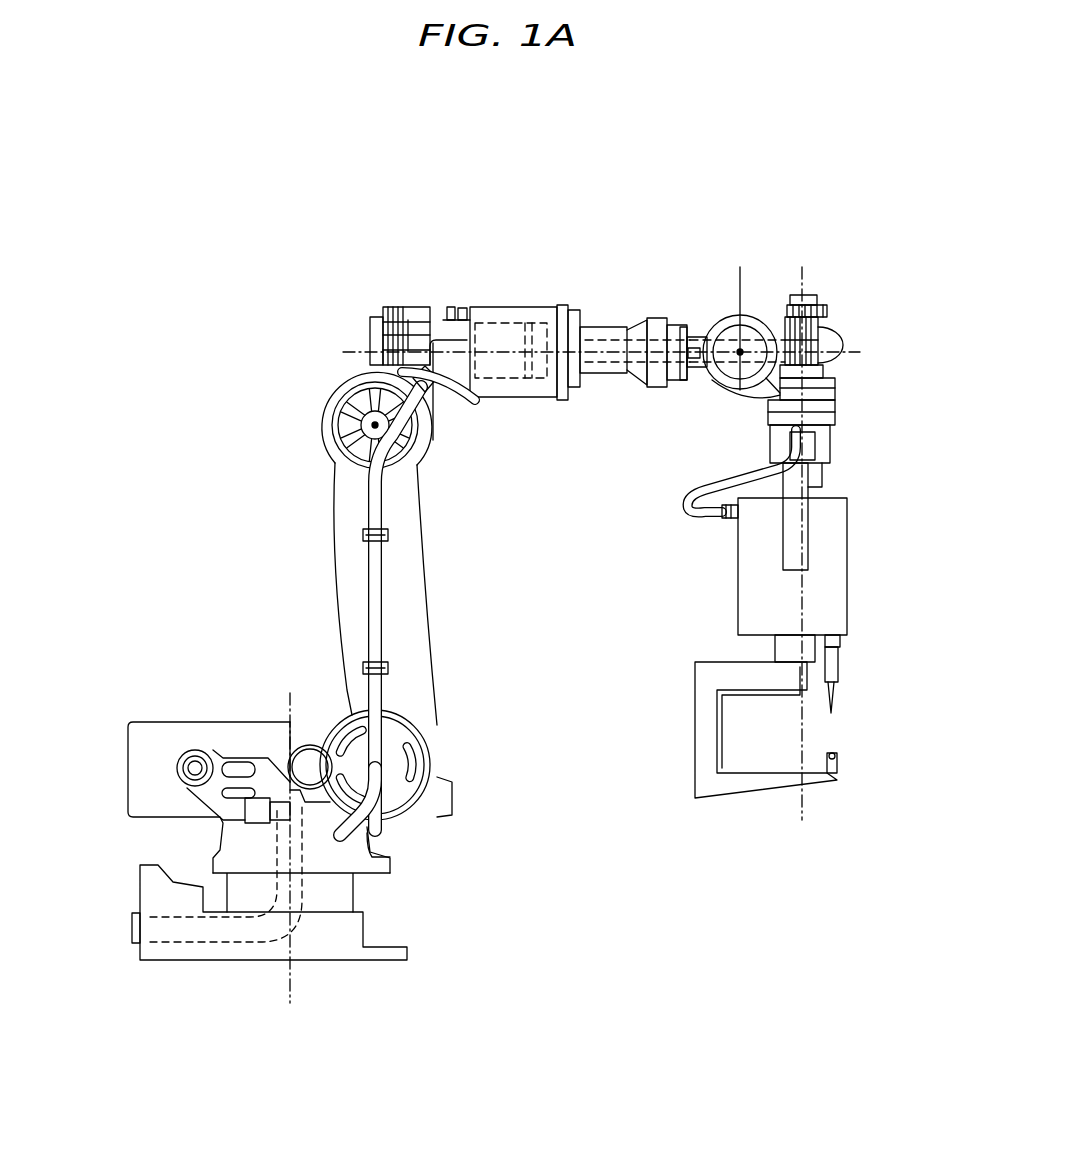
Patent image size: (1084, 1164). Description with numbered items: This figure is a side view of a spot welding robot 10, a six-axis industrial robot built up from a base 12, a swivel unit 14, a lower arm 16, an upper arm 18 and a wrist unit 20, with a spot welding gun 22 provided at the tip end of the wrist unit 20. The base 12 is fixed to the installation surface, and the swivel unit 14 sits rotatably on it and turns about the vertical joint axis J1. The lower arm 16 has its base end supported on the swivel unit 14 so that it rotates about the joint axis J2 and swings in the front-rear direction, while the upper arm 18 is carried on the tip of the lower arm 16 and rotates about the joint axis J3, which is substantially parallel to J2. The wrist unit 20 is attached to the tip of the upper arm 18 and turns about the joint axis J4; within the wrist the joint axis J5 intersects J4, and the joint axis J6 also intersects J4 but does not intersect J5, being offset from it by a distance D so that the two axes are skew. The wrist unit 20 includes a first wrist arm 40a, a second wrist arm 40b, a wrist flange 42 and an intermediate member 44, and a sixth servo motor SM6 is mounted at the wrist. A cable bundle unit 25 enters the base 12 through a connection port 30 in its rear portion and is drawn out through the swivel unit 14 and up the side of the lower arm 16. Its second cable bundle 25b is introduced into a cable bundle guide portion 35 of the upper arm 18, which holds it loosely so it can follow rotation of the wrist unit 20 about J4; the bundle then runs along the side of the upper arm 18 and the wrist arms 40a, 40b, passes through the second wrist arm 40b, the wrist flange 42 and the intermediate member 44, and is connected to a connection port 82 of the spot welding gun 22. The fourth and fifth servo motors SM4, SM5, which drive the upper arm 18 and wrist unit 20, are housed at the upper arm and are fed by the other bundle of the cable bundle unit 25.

The spot welding robot 10 is at (275, 152).
The base 12 is at (363, 917).
The swivel unit 14 is at (380, 832).
The lower arm 16 is at (420, 602).
The upper arm 18 is at (607, 382).
The wrist unit 20 is at (822, 262).
The spot welding gun 22 is at (707, 722).
The cable bundle unit 25 is at (367, 417).
The second cable bundle 25b is at (608, 415).
The connection port 30 is at (125, 917).
The cable bundle guide portion 35 is at (510, 306).
The first wrist arm 40a is at (703, 417).
The second wrist arm 40b is at (837, 388).
The wrist flange 42 is at (837, 423).
The intermediate member 44 is at (828, 447).
The connection port 82 is at (723, 520).
The joint axis J1 is at (293, 667).
The joint axis J2 is at (427, 725).
The joint axis J3 is at (413, 450).
The joint axis J4 is at (315, 354).
The joint axis J5 is at (733, 363).
The joint axis J6 is at (803, 287).
The fourth servo motor SM4 is at (382, 317).
The fifth servo motor SM5 is at (377, 360).
The sixth servo motor SM6 is at (827, 328).
The distance D is at (800, 279).